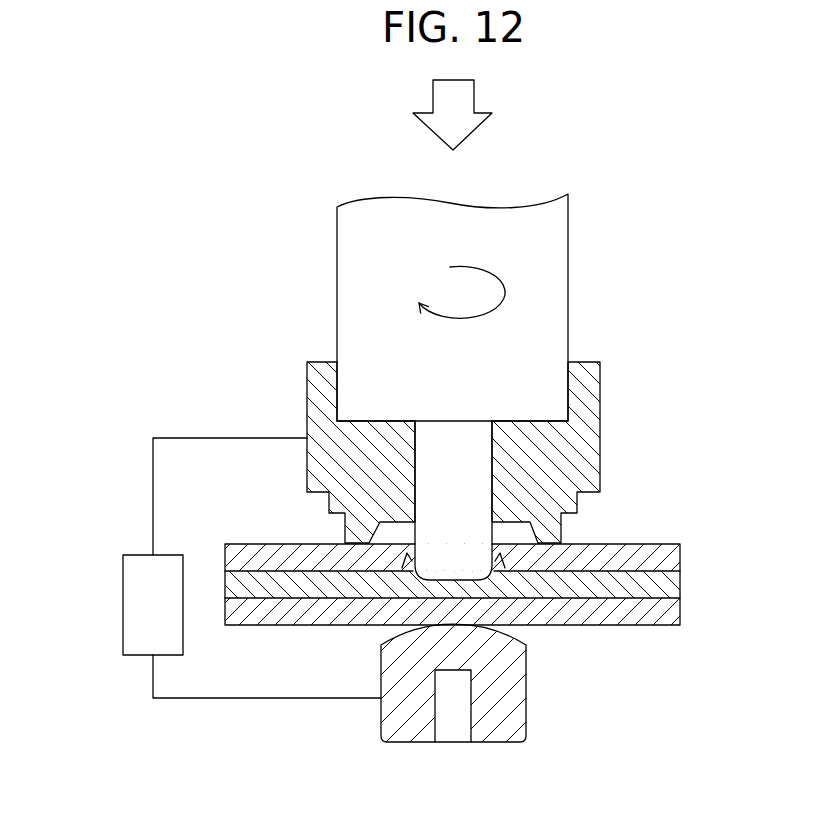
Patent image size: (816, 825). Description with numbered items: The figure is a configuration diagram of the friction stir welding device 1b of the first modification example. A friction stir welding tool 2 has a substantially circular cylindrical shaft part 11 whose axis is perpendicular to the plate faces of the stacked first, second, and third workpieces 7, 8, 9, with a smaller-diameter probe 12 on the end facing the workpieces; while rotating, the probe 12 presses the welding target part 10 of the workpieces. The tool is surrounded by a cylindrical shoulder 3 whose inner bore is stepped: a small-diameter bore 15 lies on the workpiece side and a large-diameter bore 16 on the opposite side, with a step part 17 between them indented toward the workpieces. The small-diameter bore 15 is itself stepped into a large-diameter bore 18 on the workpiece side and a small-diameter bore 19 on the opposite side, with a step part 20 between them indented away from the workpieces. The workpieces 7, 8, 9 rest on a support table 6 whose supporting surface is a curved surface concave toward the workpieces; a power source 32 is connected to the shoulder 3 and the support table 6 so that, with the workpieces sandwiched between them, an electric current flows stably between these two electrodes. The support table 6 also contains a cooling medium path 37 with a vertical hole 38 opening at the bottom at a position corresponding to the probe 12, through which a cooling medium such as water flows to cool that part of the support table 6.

The friction stir welding device 1b is at (584, 130).
The friction stir welding tool 2 is at (524, 387).
The shoulder 3 is at (578, 432).
The support table 6 is at (433, 716).
The first workpiece 7 is at (672, 613).
The second workpiece 8 is at (672, 582).
The third workpiece 9 is at (672, 552).
The welding target part 10 is at (438, 585).
The shaft part 11 is at (555, 243).
The probe 12 is at (471, 445).
The small-diameter bore 15 is at (418, 452).
The large-diameter bore 16 is at (337, 374).
The step part 17 is at (388, 420).
The large-diameter bore 18 is at (388, 528).
The small-diameter bore 19 is at (489, 453).
The step part 20 is at (507, 525).
The power source 32 is at (120, 610).
The cooling medium path 37 is at (448, 727).
The vertical hole 38 is at (440, 688).